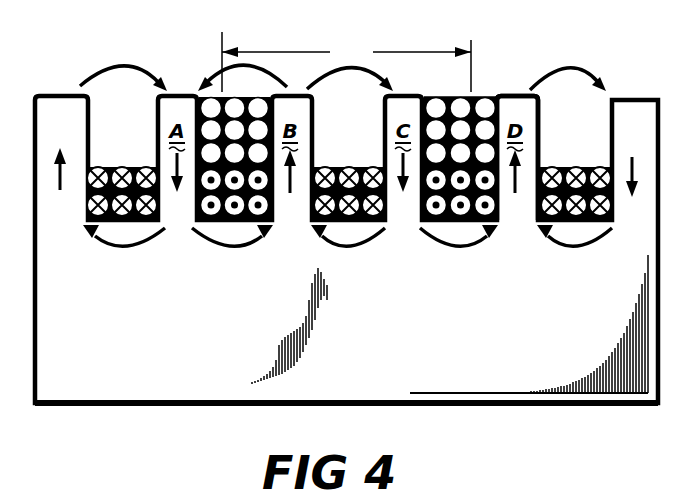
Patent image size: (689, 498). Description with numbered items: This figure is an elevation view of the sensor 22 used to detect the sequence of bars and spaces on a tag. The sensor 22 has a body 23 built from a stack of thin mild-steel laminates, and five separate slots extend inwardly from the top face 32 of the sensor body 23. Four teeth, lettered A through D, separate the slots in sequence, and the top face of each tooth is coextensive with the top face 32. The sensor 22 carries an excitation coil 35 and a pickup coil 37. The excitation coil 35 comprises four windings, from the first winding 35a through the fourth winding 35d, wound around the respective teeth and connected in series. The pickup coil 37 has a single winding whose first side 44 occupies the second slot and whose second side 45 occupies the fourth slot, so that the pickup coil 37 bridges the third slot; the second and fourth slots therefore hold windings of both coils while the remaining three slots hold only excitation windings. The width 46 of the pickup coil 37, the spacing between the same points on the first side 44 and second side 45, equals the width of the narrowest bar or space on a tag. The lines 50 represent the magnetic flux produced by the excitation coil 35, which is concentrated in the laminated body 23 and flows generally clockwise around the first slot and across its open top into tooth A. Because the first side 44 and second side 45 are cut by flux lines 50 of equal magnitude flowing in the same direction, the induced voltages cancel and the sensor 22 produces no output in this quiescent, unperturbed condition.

The sensor 22 is at (76, 422).
The sensor body 23 is at (204, 396).
The top face 32 is at (508, 95).
The excitation coil 35 is at (112, 262).
The excitation winding 35a is at (97, 166).
The excitation winding 35d is at (563, 165).
The pickup coil 37 is at (487, 76).
The first side of pickup coil 44 is at (253, 96).
The second side of pickup coil 45 is at (433, 96).
The width of pickup coil 46 is at (346, 62).
The magnetic flux lines 50 is at (124, 64).